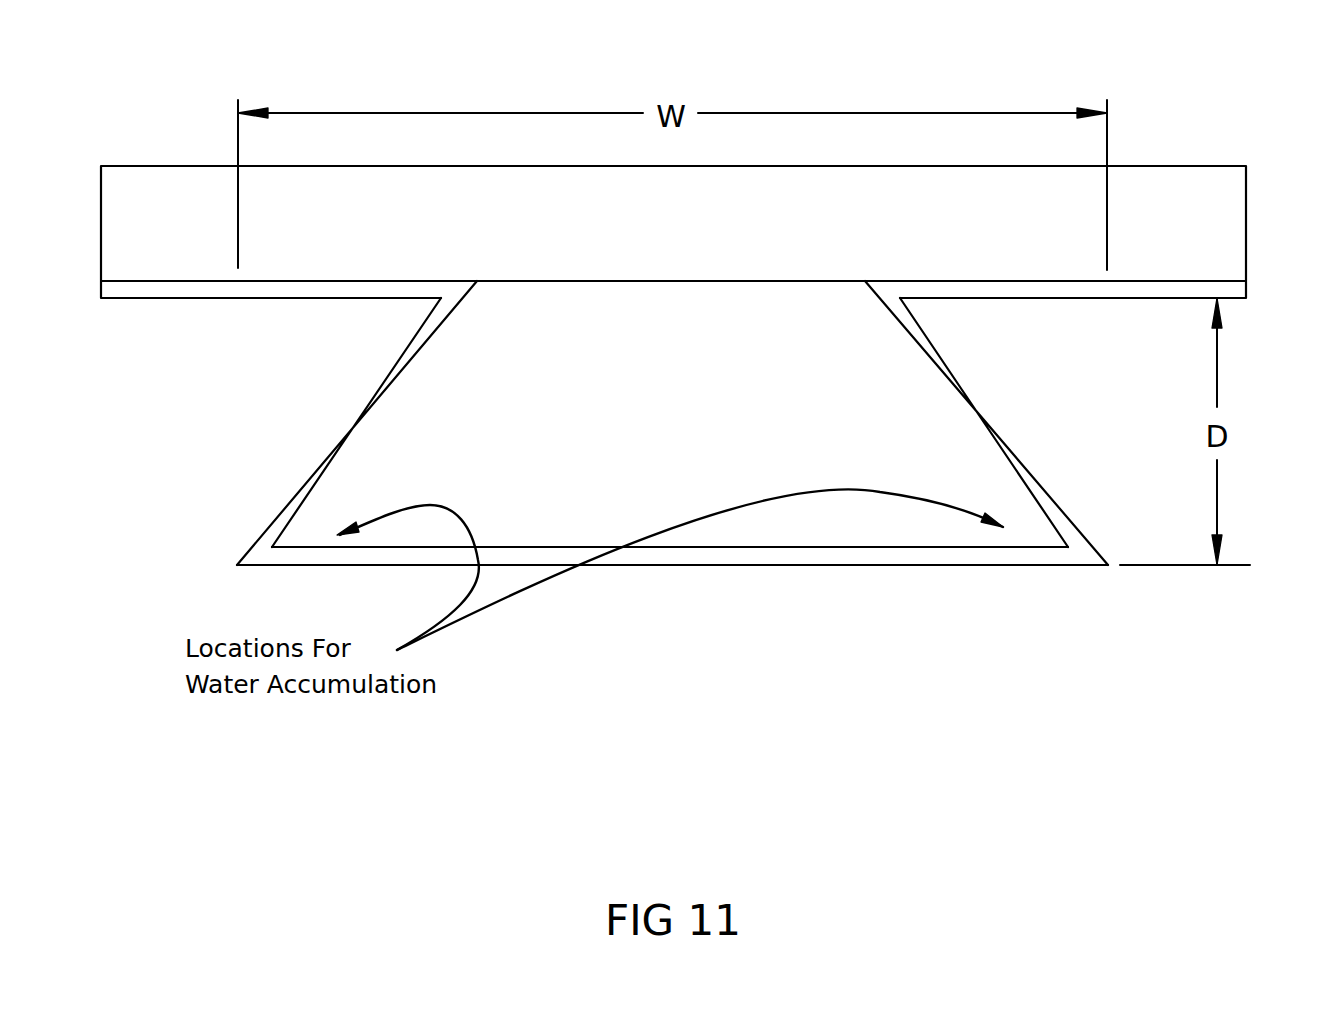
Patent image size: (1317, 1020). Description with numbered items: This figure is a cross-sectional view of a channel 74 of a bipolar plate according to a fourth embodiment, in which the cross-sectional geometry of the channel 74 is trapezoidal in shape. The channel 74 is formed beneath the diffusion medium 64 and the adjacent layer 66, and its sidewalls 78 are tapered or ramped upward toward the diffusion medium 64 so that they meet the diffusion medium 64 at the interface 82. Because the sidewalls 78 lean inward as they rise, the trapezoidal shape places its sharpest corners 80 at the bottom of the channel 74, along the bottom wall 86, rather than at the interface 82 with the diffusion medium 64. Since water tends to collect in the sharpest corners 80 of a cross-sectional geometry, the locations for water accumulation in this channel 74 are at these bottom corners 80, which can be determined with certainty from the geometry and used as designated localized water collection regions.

The diffusion medium 64 is at (697, 183).
The deck panel 66 is at (1226, 177).
The channel 74 is at (672, 554).
The sidewalls 78 is at (343, 443).
The sharpest corners 80 is at (313, 532).
The interface 82 is at (441, 299).
The bottom wall 86 is at (689, 557).